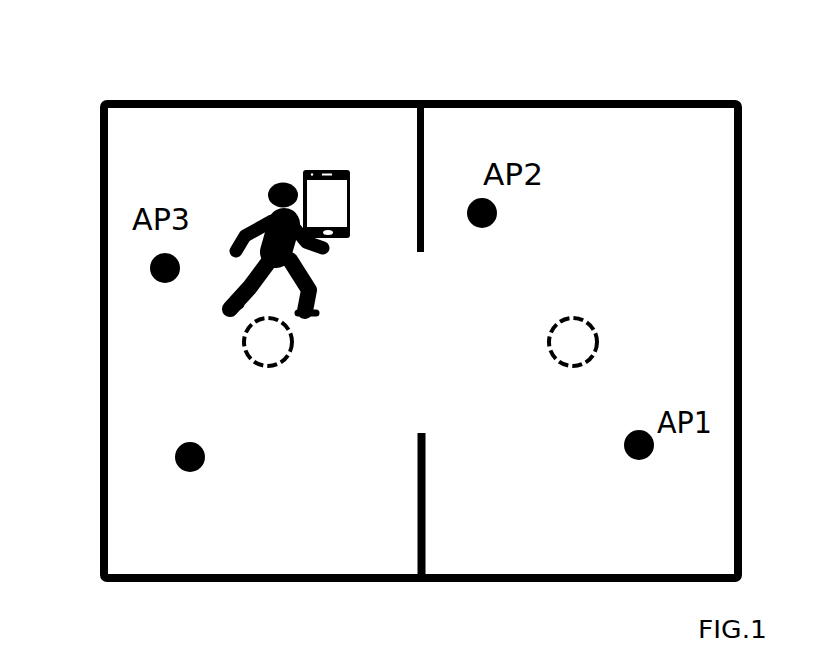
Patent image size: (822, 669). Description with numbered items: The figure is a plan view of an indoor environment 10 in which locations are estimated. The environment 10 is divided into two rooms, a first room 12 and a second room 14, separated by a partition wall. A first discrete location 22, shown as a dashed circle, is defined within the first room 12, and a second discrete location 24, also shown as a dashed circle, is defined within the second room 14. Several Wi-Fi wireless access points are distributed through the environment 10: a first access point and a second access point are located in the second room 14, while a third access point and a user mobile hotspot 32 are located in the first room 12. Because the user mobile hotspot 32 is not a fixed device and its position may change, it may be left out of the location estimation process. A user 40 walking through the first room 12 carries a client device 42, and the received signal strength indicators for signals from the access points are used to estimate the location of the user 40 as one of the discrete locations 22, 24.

The environment 10 is at (84, 67).
The first room 12 is at (272, 131).
The second room 14 is at (578, 116).
The first discrete location 22 is at (285, 364).
The second discrete location 24 is at (594, 329).
The user mobile hotspot 32 is at (183, 470).
The user 40 is at (313, 300).
The client device 42 is at (347, 238).